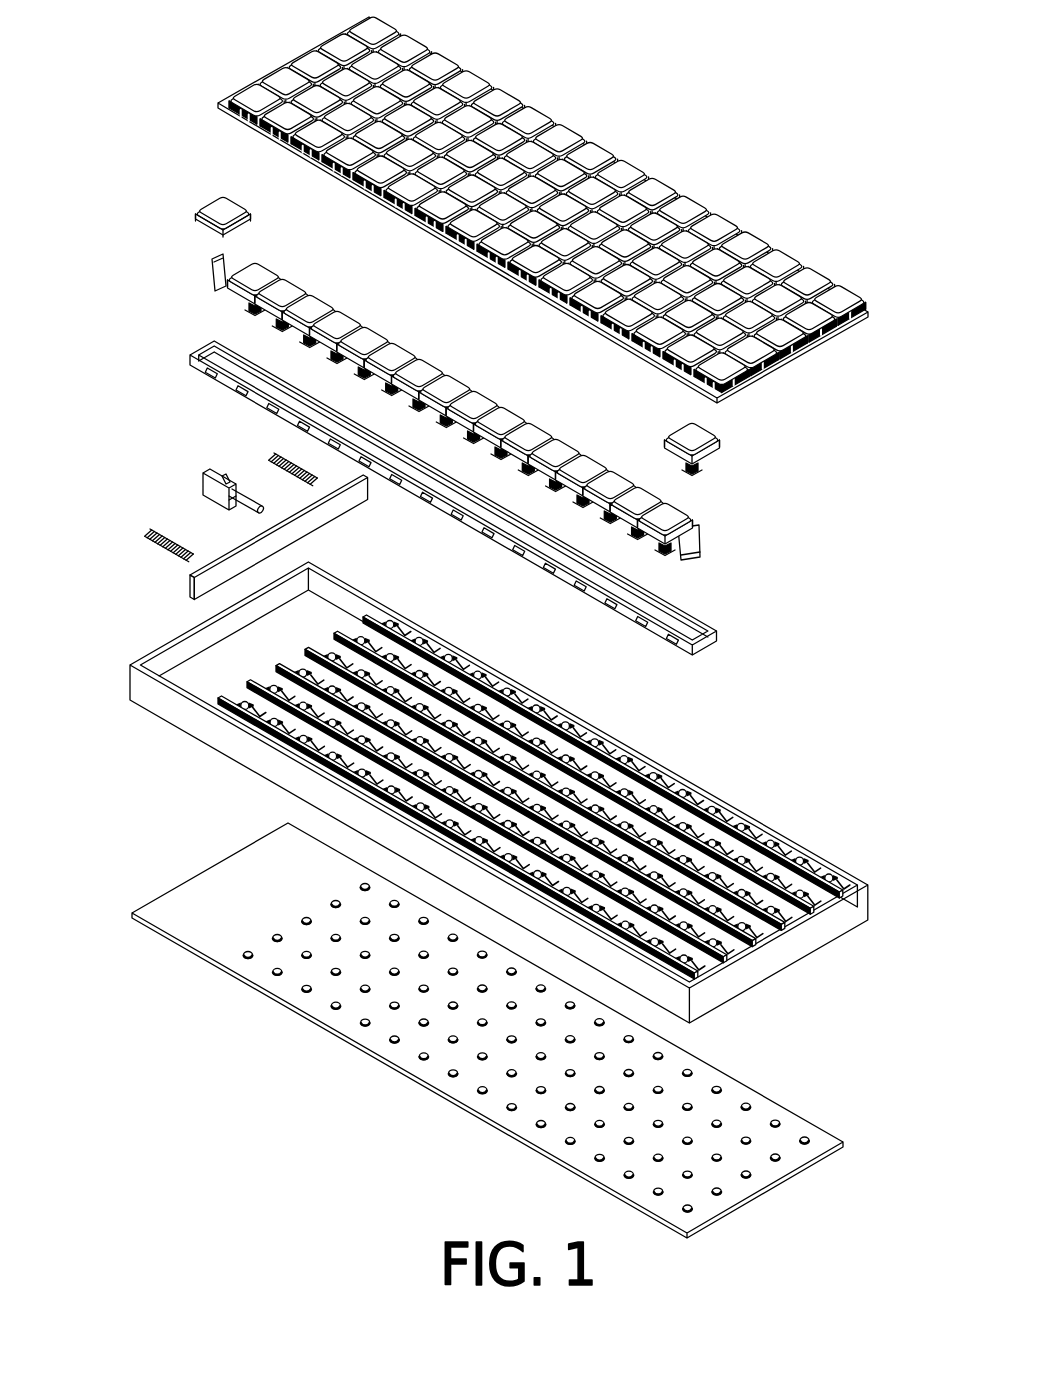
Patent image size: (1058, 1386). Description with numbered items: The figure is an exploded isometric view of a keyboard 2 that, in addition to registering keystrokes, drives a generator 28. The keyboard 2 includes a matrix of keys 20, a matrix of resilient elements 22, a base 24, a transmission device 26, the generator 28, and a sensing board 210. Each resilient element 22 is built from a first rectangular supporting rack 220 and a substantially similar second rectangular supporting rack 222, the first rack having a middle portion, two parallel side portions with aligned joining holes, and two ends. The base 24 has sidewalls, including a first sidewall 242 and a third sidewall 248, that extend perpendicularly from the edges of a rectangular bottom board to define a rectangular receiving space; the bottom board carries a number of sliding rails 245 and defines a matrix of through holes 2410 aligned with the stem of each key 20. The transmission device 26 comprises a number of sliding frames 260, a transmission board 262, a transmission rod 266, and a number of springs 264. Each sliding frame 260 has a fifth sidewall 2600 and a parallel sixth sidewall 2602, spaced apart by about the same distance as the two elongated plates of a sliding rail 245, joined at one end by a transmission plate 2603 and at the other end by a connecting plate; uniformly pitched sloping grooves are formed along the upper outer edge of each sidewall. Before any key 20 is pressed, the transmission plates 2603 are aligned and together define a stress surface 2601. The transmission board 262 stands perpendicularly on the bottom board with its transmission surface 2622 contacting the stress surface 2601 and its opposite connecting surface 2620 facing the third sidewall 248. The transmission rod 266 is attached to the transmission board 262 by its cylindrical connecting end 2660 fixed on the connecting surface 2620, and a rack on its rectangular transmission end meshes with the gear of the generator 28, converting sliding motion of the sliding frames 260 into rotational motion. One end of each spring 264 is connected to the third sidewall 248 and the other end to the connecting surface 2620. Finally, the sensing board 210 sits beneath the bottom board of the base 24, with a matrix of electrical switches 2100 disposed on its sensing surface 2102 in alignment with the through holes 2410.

The keyboard 2 is at (184, 82).
The key 20 is at (662, 450).
The resilient element 22 is at (708, 564).
The base 24 is at (760, 830).
The transmission device 26 is at (85, 467).
The generator 28 is at (232, 510).
The sensing board 210 is at (190, 905).
The first rectangular supporting rack 220 is at (697, 535).
The second rectangular supporting rack 222 is at (707, 538).
The first sidewall 242 is at (565, 705).
The sliding rail 245 is at (470, 690).
The third sidewall 248 is at (152, 656).
The sliding frame 260 is at (225, 383).
The transmission board 262 is at (220, 555).
The spring 264 is at (165, 537).
The transmission rod 266 is at (207, 470).
The electrical switch 2100 is at (778, 1125).
The sensing surface 2102 is at (228, 950).
The through hole 2410 is at (672, 815).
The fifth sidewall 2600 is at (715, 620).
The stress surface 2601 is at (215, 109).
The sixth sidewall 2602 is at (658, 620).
The transmission plate 2603 is at (215, 345).
The connecting surface 2620 is at (183, 587).
The transmission surface 2622 is at (327, 507).
The connecting end 2660 is at (262, 492).